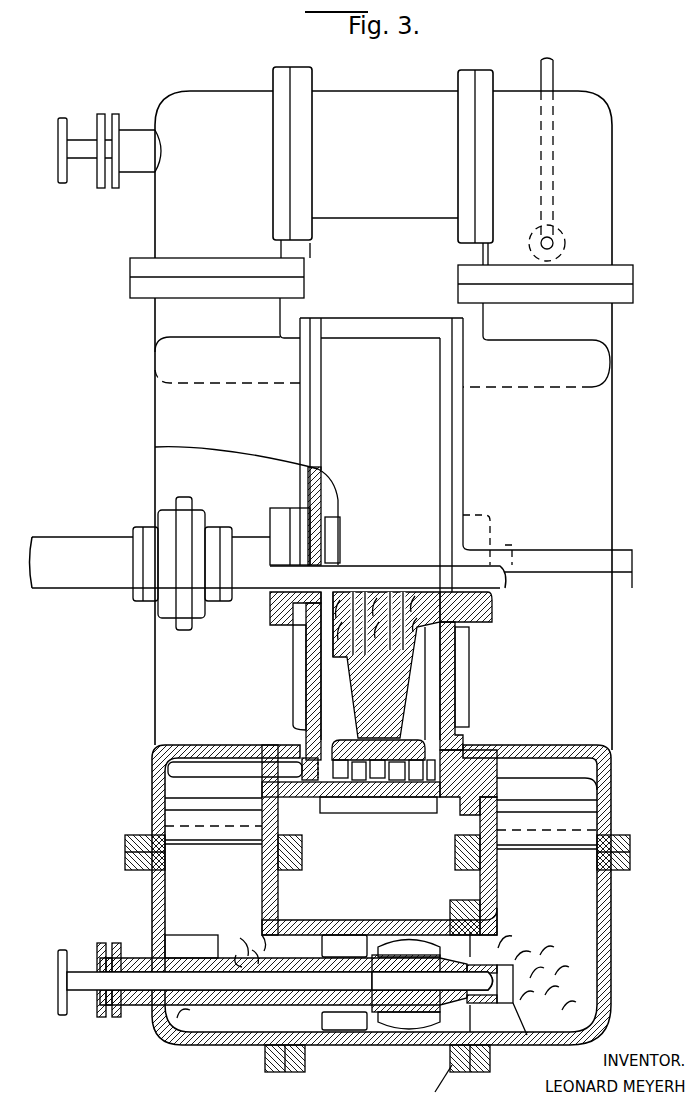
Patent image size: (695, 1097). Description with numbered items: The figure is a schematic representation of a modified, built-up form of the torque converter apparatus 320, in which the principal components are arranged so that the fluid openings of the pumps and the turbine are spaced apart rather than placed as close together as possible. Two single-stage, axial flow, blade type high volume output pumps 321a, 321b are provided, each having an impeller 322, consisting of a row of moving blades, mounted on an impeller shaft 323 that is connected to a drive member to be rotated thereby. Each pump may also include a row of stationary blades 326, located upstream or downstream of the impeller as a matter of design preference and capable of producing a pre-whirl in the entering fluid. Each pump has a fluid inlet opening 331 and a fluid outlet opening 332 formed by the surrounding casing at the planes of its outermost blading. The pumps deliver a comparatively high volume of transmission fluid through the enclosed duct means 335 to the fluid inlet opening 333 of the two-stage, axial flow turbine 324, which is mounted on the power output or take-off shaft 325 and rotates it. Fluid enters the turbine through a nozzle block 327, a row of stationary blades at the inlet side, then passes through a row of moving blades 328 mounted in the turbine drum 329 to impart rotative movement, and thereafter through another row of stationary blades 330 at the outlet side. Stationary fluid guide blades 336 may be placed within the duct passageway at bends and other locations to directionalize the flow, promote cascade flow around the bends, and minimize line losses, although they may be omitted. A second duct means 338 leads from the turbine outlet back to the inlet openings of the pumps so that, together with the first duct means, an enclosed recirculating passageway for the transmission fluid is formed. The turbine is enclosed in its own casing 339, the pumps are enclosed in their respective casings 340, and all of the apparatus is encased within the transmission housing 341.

The torque converter apparatus 320 is at (628, 663).
The pump 321a is at (378, 1022).
The pump 321b is at (392, 80).
The impeller 322 is at (410, 1022).
The impeller shaft 323 is at (85, 990).
The turbine 324 is at (470, 666).
The take-off shaft 325 is at (83, 580).
The stationary blades 326 is at (345, 1022).
The nozzle block 327 is at (332, 790).
The moving blades 328 is at (408, 780).
The turbine drum 329 is at (411, 748).
The stationary blades 330 is at (418, 780).
The fluid inlet opening 331 is at (508, 935).
The fluid outlet opening 332 is at (270, 945).
The fluid inlet opening 333 is at (285, 770).
The duct means 335 is at (163, 230).
The stationary fluid guide blades 336 is at (175, 786).
The duct means 338 is at (603, 224).
The casing 339 is at (447, 708).
The casing 340 is at (447, 78).
The transmission housing 341 is at (197, 1048).